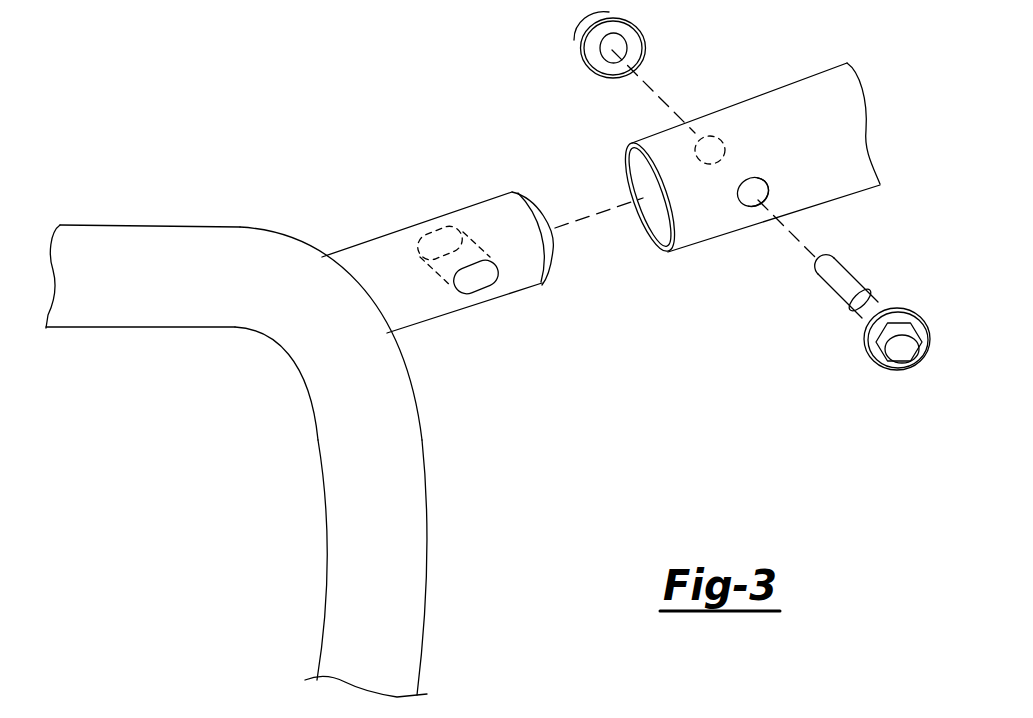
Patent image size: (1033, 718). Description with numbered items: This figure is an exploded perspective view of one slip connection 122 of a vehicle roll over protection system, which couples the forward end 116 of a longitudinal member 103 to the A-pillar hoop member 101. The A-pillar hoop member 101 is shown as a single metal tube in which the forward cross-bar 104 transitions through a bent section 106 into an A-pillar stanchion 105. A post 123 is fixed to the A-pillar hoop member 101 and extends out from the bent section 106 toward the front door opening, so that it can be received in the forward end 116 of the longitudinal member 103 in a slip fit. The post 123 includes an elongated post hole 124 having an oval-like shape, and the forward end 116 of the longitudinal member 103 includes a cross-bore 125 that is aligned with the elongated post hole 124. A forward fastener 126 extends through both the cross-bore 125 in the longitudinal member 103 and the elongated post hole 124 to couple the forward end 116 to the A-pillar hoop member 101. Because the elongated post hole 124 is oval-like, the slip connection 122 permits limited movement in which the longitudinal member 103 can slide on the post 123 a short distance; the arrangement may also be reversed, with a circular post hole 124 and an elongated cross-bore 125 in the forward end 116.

The A-pillar hoop member 101 is at (236, 412).
The longitudinal member 103 is at (727, 163).
The forward cross-bar 104 is at (138, 247).
The A-pillar stanchion 105 is at (353, 627).
The bent section 106 is at (308, 373).
The forward end 116 is at (744, 125).
The slip connection 122 is at (752, 234).
The post 123 is at (437, 257).
The elongated post hole 124 is at (473, 282).
The cross-bore 125 is at (750, 200).
The forward fastener 126 is at (857, 317).